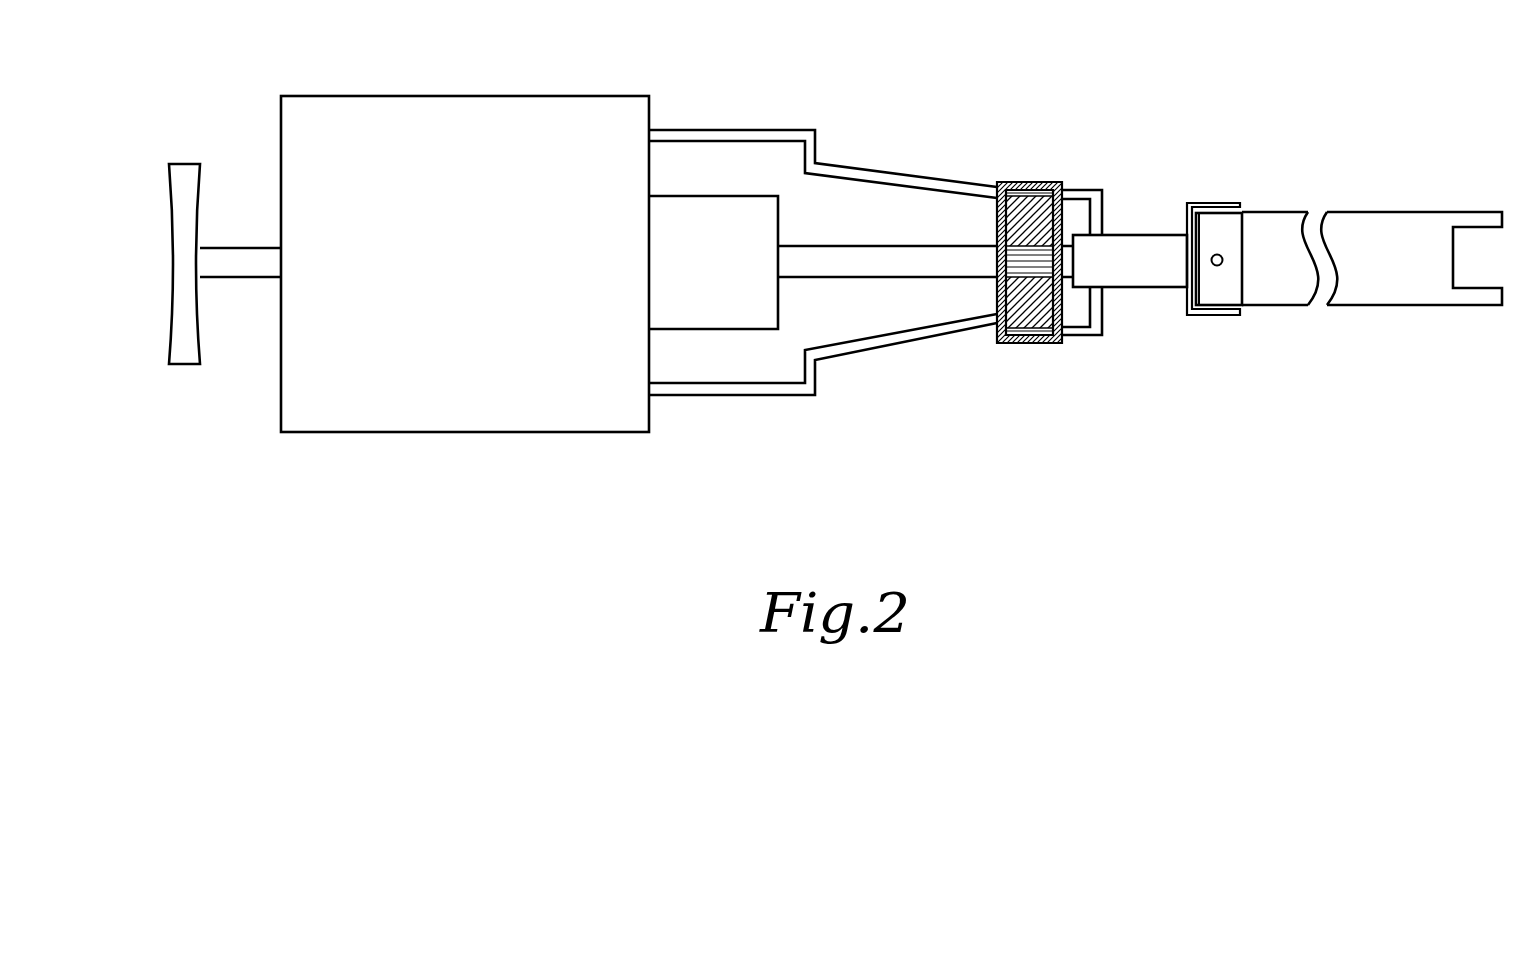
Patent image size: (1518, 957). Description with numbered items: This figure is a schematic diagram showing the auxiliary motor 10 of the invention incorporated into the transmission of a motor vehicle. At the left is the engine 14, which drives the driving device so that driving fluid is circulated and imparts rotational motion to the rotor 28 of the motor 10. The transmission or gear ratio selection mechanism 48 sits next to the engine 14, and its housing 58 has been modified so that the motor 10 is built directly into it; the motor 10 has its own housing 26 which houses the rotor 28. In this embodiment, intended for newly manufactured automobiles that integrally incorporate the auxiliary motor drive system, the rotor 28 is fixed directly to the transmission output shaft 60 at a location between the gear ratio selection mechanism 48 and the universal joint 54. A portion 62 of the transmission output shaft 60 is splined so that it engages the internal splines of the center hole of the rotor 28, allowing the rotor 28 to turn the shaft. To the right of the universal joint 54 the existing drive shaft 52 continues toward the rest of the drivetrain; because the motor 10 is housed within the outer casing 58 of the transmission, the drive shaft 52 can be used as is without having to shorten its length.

The motor 10 is at (1077, 166).
The engine 14 is at (525, 415).
The housing 26 is at (1017, 187).
The rotor 28 is at (1035, 310).
The gear ratio selection mechanism 48 is at (717, 319).
The drive shaft 52 is at (1273, 287).
The universal joint 54 is at (1202, 315).
The housing 58 is at (933, 343).
The transmission output shaft 60 is at (825, 270).
The splined portion 62 is at (1055, 266).